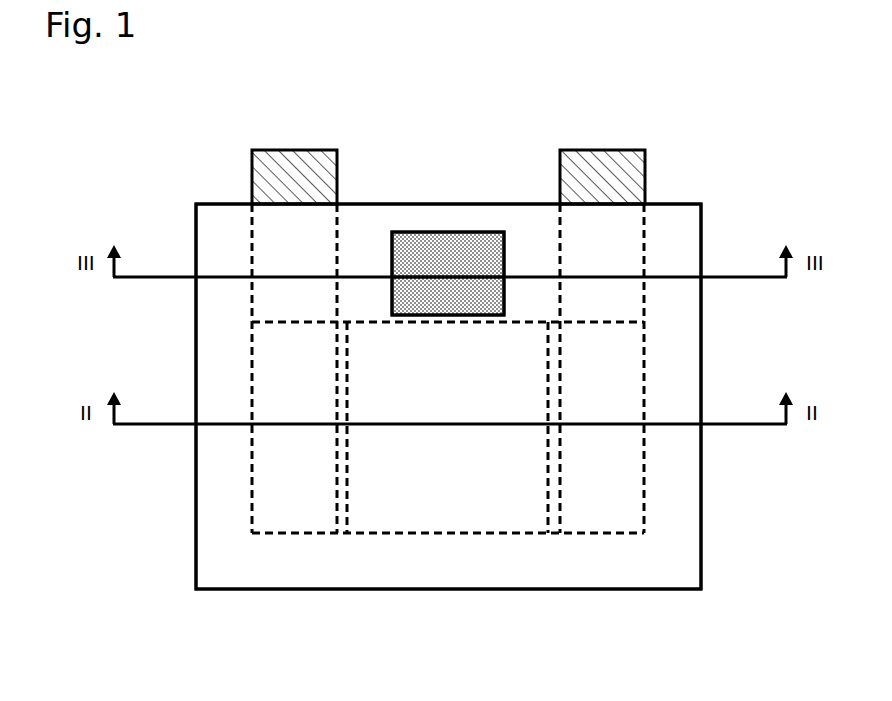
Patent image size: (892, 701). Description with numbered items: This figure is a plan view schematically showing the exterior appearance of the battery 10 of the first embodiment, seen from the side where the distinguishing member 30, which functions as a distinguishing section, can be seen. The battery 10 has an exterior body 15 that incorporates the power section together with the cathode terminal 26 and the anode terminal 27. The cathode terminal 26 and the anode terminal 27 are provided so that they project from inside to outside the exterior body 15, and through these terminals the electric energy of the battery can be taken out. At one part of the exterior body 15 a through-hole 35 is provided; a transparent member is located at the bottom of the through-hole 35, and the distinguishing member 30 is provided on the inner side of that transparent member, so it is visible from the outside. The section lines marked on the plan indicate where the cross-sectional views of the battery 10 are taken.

The semiconductor device 10 is at (458, 87).
The substrate 15 is at (672, 235).
The first electrode 26 is at (310, 166).
The second electrode 27 is at (615, 172).
The gate region 30 is at (465, 260).
The gate electrode 35 is at (444, 244).